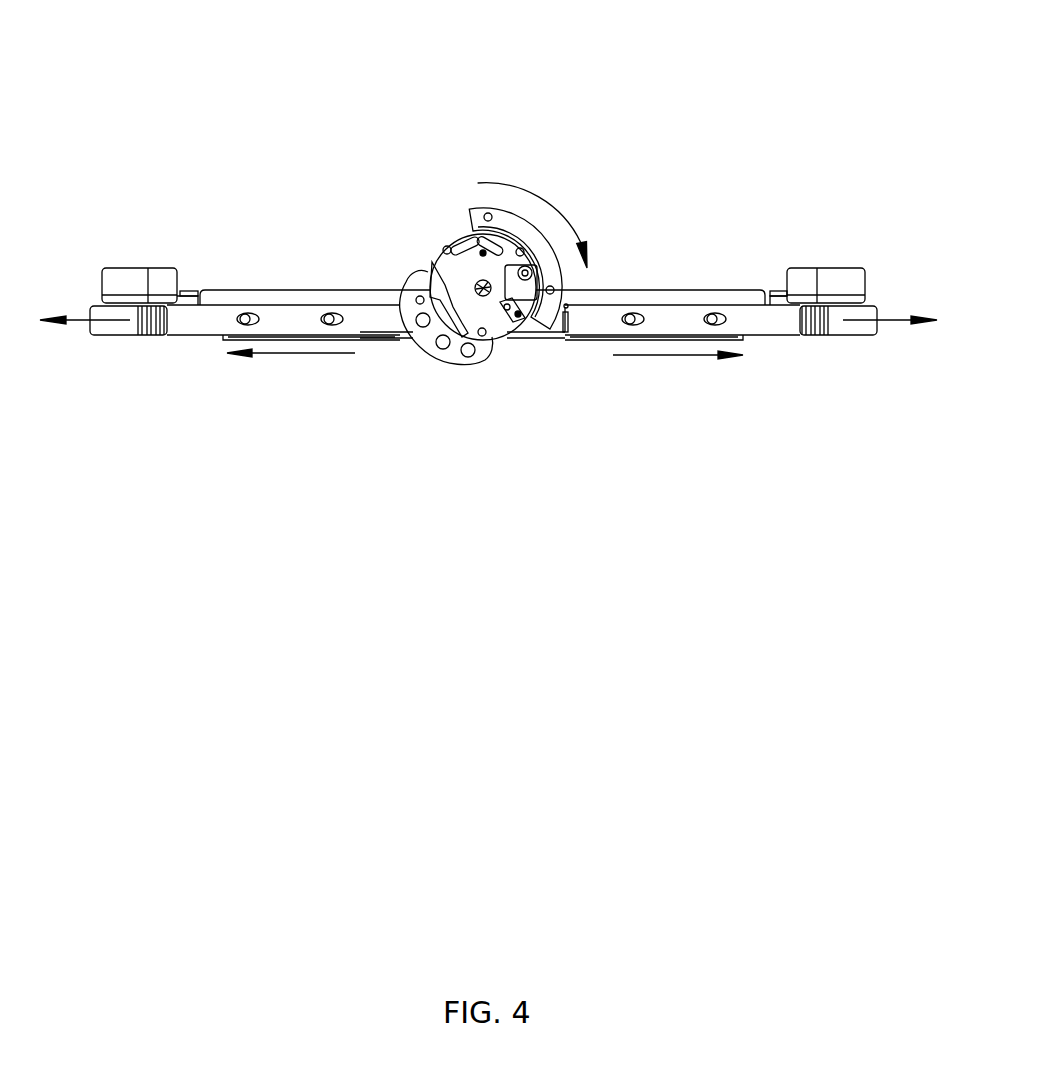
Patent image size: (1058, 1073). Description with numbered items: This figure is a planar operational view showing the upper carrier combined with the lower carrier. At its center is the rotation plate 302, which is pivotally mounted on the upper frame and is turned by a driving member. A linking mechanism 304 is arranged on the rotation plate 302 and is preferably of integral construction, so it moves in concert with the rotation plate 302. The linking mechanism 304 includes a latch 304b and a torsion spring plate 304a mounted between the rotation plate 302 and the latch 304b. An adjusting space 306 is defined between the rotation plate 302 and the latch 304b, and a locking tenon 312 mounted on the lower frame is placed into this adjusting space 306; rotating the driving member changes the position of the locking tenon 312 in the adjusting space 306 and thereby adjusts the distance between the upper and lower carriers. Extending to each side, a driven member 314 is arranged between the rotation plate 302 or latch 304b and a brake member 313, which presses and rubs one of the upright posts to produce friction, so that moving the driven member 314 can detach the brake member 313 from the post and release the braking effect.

The rotation plate 302 is at (477, 213).
The linking mechanism 304 is at (352, 100).
The torsion spring plate 304a is at (483, 252).
The latch 304b is at (413, 283).
The adjusting space 306 is at (450, 320).
The locking tenon 312 is at (487, 333).
The brake member 313 is at (112, 327).
The driven member 314 is at (215, 317).